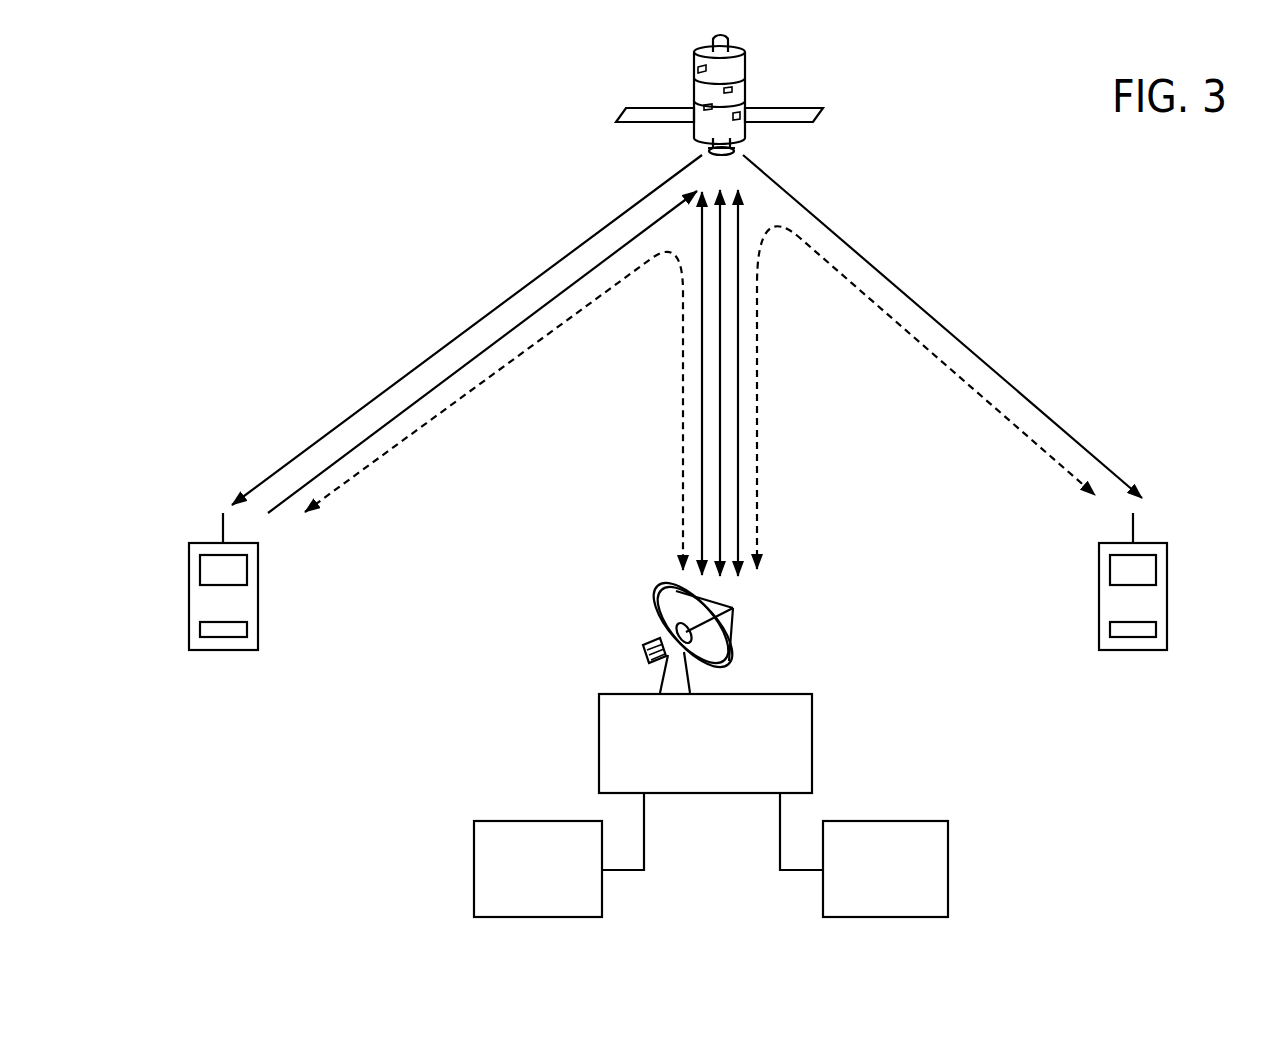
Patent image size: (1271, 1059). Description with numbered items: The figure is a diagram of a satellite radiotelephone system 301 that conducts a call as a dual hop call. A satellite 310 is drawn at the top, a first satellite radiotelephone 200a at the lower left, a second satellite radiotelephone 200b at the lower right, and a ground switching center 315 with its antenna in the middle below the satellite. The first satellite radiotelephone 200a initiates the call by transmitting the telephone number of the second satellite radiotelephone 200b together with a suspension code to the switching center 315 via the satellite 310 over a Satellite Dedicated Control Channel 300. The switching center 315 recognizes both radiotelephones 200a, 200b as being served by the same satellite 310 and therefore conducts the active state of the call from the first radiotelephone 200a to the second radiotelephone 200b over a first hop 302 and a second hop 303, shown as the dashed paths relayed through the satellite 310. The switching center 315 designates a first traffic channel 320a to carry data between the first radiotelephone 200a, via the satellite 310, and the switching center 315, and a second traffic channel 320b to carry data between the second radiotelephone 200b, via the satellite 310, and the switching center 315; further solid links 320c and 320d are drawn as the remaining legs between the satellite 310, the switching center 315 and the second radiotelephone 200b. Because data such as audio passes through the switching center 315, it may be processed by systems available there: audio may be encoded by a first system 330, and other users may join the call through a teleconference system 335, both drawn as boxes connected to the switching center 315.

The satellite radiotelephone system 301 is at (363, 287).
The satellite 310 is at (695, 90).
The first traffic channel 320a is at (385, 393).
The Satellite Dedicated Control Channel (SDCCH) 300 is at (483, 352).
The first hop 302 is at (410, 428).
The second traffic channel 320b is at (715, 320).
The feeder link signal between satellite and gateway 320c is at (738, 478).
The second hop 303 is at (975, 388).
The forward link signal to second communication device 320d is at (988, 367).
The first satellite radiotelephone 200a is at (228, 650).
The second satellite radiotelephone 200b is at (1145, 650).
The switching center 315 is at (730, 766).
The first system 330 is at (568, 883).
The teleconference system 335 is at (920, 883).